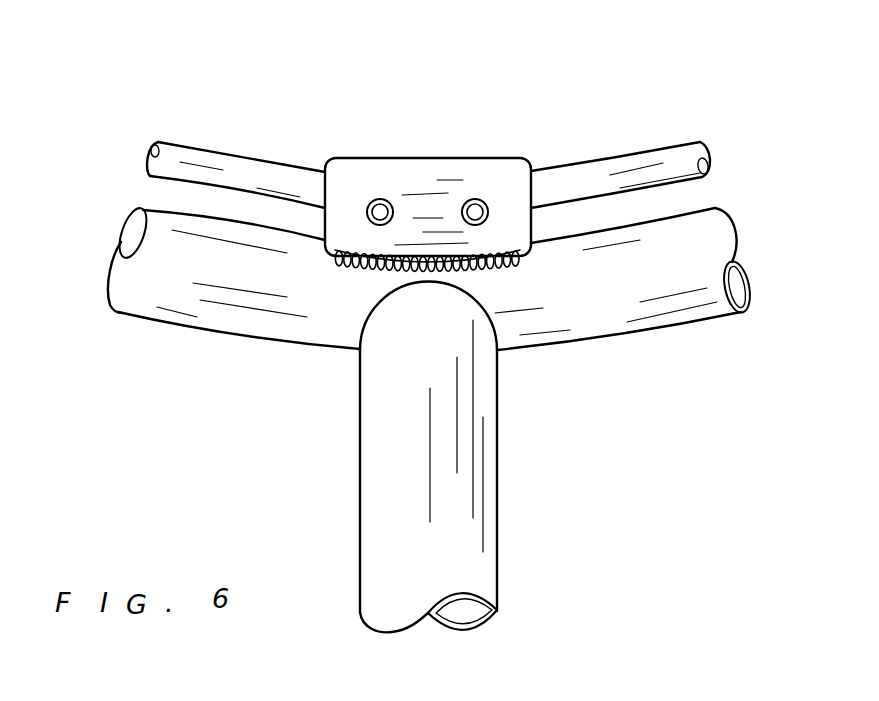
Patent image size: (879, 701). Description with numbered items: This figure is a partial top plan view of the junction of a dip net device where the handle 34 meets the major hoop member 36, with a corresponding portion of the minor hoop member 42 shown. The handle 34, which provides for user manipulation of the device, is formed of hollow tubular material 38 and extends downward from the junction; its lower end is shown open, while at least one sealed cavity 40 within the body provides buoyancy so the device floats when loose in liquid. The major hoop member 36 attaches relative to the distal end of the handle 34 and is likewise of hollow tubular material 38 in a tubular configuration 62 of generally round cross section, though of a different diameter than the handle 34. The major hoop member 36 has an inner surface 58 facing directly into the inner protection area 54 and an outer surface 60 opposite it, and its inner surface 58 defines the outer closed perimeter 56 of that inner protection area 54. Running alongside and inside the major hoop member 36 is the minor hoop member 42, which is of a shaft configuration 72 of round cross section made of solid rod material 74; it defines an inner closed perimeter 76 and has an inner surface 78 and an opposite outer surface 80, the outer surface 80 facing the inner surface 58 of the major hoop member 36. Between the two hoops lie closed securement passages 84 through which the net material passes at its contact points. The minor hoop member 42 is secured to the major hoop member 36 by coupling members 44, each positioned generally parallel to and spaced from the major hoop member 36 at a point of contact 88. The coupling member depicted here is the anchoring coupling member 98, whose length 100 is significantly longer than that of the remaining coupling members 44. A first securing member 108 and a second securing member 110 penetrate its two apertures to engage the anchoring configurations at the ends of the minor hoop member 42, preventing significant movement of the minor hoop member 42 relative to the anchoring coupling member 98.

The handle 34 is at (498, 495).
The major hoop member 36 is at (683, 328).
The hollow tubular material 38 is at (160, 327).
The sealed cavity 40 is at (455, 613).
The minor hoop member 42 is at (657, 150).
The coupling member 44 is at (502, 163).
The inner protection area 54 is at (680, 202).
The outer closed perimeter 56 is at (197, 203).
The inner surface 58 is at (598, 232).
The outer surface 60 is at (545, 350).
The tubular configuration 62 is at (207, 333).
The shaft configuration 72 is at (700, 140).
The solid rod material 74 is at (177, 142).
The inner closed perimeter 76 is at (263, 217).
The inner surface 78 is at (260, 160).
The outer surface 80 is at (617, 197).
The closed securement passage 84 is at (558, 230).
The point of contact 88 is at (330, 260).
The anchoring coupling member 98 is at (362, 158).
The length 100 is at (427, 158).
The first securing member 108 is at (381, 212).
The second securing member 110 is at (476, 212).